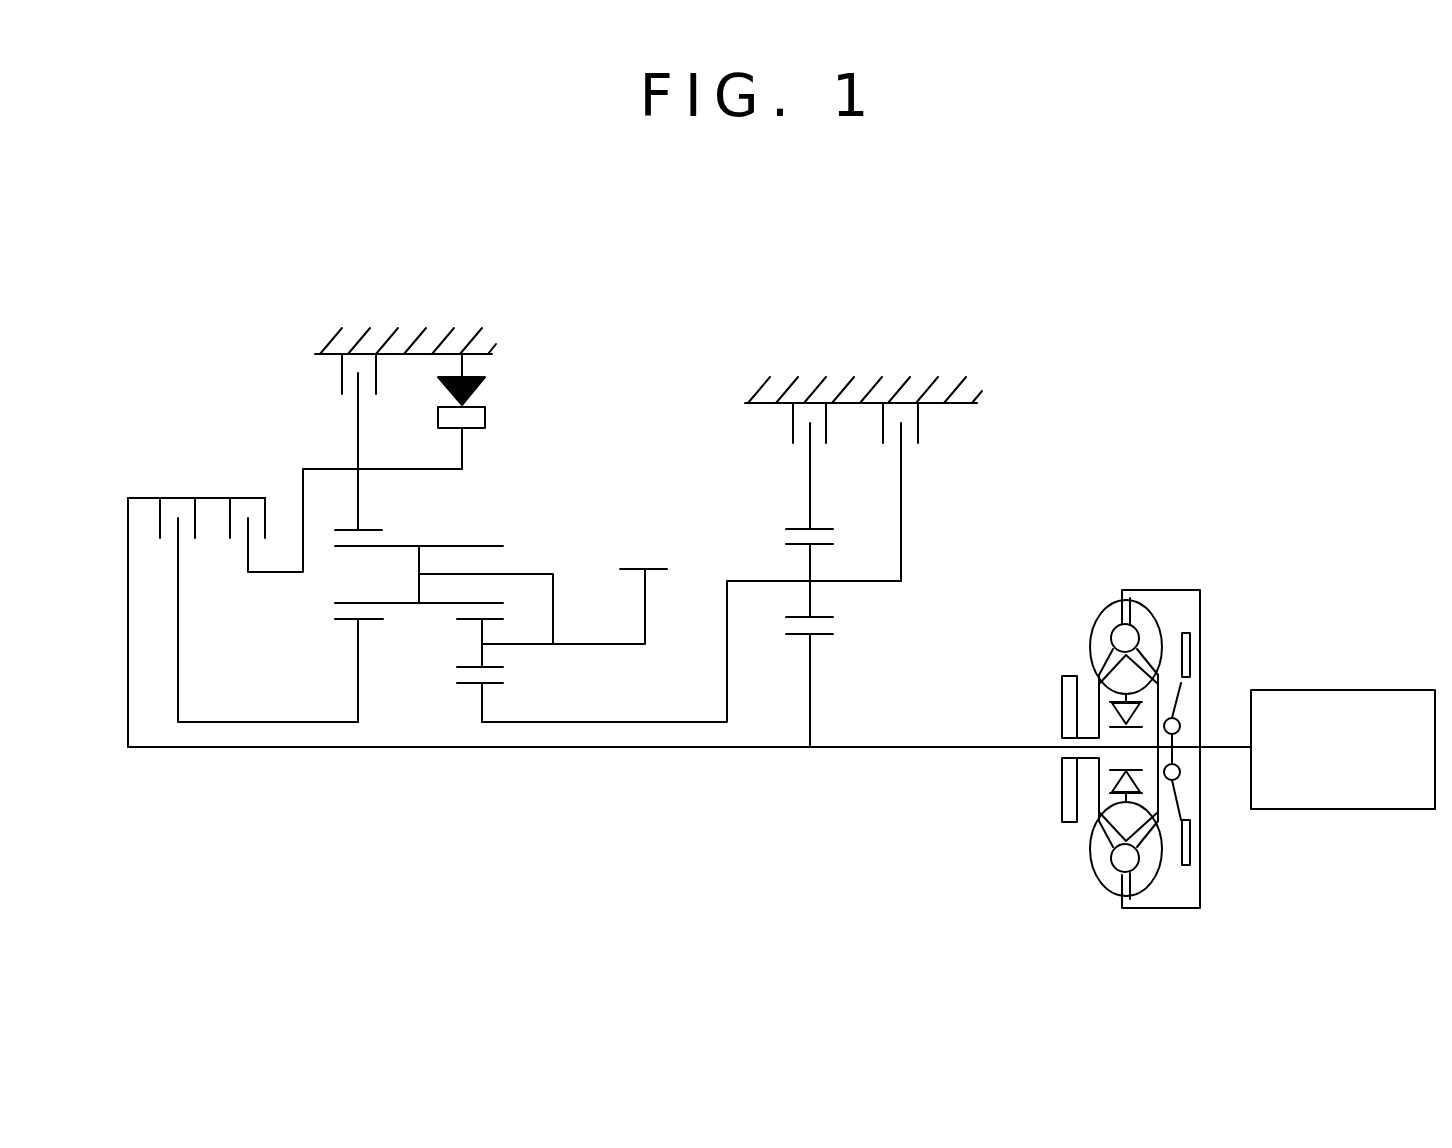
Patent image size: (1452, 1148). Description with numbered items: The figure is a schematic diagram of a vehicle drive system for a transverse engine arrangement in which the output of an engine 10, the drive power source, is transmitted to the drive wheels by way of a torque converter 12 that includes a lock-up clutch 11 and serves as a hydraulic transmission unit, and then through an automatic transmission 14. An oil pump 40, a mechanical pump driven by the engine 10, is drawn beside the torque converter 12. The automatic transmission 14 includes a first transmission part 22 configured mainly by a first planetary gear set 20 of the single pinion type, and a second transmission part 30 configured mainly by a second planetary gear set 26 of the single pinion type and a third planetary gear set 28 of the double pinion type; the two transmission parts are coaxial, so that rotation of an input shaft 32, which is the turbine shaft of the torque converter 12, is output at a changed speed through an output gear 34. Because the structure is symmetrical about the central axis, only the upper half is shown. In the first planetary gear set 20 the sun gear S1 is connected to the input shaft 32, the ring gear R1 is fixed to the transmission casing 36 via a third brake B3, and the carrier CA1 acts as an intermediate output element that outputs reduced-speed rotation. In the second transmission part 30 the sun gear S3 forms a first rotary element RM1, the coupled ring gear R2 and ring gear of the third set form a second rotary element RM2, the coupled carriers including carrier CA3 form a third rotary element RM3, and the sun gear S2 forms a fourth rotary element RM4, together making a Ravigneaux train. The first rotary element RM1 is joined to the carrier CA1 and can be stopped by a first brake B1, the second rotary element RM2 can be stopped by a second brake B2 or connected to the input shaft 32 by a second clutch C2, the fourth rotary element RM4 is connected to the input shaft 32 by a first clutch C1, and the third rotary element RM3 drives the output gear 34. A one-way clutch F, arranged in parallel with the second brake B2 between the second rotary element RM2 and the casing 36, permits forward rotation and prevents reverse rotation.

The engine 10 is at (1372, 690).
The lock-up clutch 11 is at (1188, 842).
The torque converter 12 is at (1222, 573).
The automatic transmission 14 is at (978, 252).
The first planetary gear set 20 is at (802, 761).
The first transmission part 22 is at (722, 410).
The second planetary gear set 26 is at (352, 763).
The third planetary gear set 28 is at (472, 756).
The second transmission part 30 is at (562, 325).
The input shaft 32 is at (952, 750).
The output gear 34 is at (657, 568).
The transmission casing 36 is at (433, 333).
The oil pump 40 is at (1060, 706).
The first clutch C1 is at (196, 502).
The second clutch C2 is at (248, 502).
The first brake B1 is at (923, 423).
The second brake B2 is at (339, 374).
The third brake B3 is at (789, 423).
The one-way clutch F is at (473, 411).
The sun gear S1 is at (822, 637).
The sun gear S2 is at (372, 622).
The sun gear S3 is at (492, 687).
The ring gear R1 is at (822, 525).
The ring gear R2 is at (368, 528).
The carrier CA1 is at (903, 545).
The carrier CA3 is at (520, 572).
The first rotary element RM1 is at (577, 723).
The second rotary element RM2 is at (328, 468).
The third rotary element RM3 is at (590, 645).
The fourth rotary element RM4 is at (362, 695).